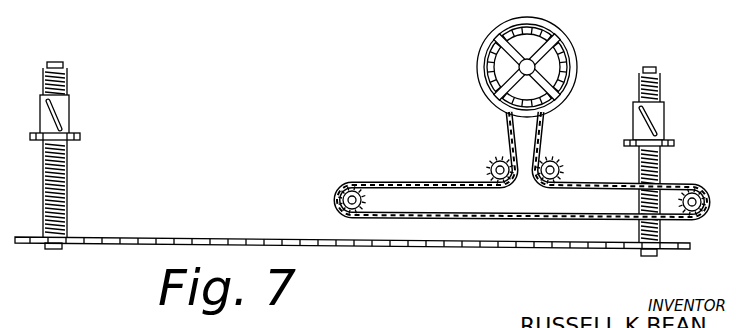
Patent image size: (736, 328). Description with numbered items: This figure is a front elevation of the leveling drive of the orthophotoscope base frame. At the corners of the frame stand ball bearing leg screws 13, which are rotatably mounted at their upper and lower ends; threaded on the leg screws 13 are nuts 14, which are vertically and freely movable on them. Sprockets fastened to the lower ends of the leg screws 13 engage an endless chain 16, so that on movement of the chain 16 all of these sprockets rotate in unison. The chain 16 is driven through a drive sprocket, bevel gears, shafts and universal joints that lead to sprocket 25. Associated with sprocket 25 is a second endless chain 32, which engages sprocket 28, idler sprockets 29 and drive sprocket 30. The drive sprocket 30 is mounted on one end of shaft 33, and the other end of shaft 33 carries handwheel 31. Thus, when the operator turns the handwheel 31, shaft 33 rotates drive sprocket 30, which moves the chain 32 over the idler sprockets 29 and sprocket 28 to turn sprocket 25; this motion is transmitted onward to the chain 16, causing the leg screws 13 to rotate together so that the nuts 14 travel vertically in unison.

The leg screws 13 is at (67, 185).
The nuts 14 is at (60, 107).
The endless chain 16 is at (537, 247).
The sprocket 25 is at (703, 188).
The sprocket 28 is at (343, 190).
The idler sprockets 29 is at (489, 161).
The drive sprocket 30 is at (558, 72).
The handwheel 31 is at (570, 55).
The endless chain 32 is at (413, 182).
The shaft 33 is at (534, 61).